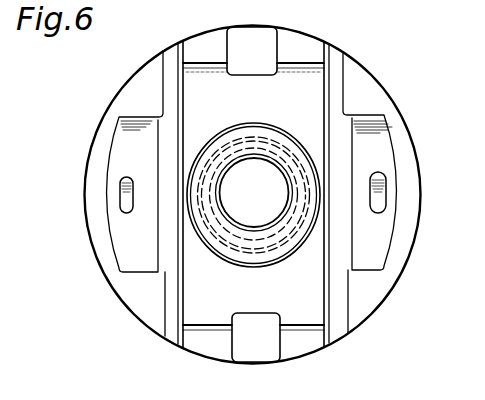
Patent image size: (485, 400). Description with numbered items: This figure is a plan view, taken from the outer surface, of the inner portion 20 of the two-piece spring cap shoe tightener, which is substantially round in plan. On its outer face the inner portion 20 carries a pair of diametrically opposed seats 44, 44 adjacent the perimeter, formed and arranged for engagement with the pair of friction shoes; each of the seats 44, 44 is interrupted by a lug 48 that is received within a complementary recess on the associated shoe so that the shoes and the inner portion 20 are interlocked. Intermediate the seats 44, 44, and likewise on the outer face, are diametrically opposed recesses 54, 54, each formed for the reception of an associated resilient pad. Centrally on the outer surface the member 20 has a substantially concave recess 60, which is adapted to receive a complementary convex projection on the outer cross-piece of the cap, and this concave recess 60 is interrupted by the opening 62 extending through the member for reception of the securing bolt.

The inner portion of the spring cap 20 is at (394, 297).
The seats 44 is at (199, 50).
The lug 48 is at (260, 59).
The recesses 54 is at (383, 123).
The concave recess 60 is at (276, 133).
The opening 62 is at (278, 202).